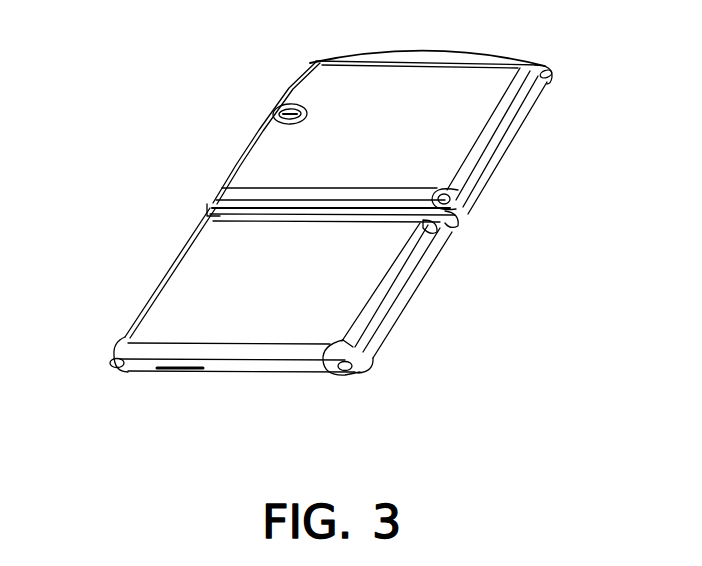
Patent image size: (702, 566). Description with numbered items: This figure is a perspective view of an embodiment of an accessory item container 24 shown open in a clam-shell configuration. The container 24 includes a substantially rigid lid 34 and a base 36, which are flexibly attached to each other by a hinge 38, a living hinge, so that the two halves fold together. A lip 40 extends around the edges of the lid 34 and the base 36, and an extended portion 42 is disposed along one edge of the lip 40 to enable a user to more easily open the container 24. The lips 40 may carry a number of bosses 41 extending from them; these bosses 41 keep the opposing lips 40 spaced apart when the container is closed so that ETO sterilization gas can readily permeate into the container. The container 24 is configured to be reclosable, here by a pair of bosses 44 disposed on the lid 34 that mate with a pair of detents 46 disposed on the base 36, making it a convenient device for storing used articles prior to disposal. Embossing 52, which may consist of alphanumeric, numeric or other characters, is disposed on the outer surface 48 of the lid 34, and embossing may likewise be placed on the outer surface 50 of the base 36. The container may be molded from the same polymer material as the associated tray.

The container 24 is at (475, 160).
The lid 34 is at (503, 105).
The base 36 is at (352, 273).
The hinge 38 is at (205, 207).
The lip 40 is at (446, 226).
The bosses 41 is at (460, 165).
The extended portion 42 is at (426, 57).
The bosses 44 is at (556, 78).
The detents 46 is at (353, 363).
The outer surface 48 is at (247, 180).
The outer surface 50 is at (183, 280).
The embossing 52 is at (318, 106).